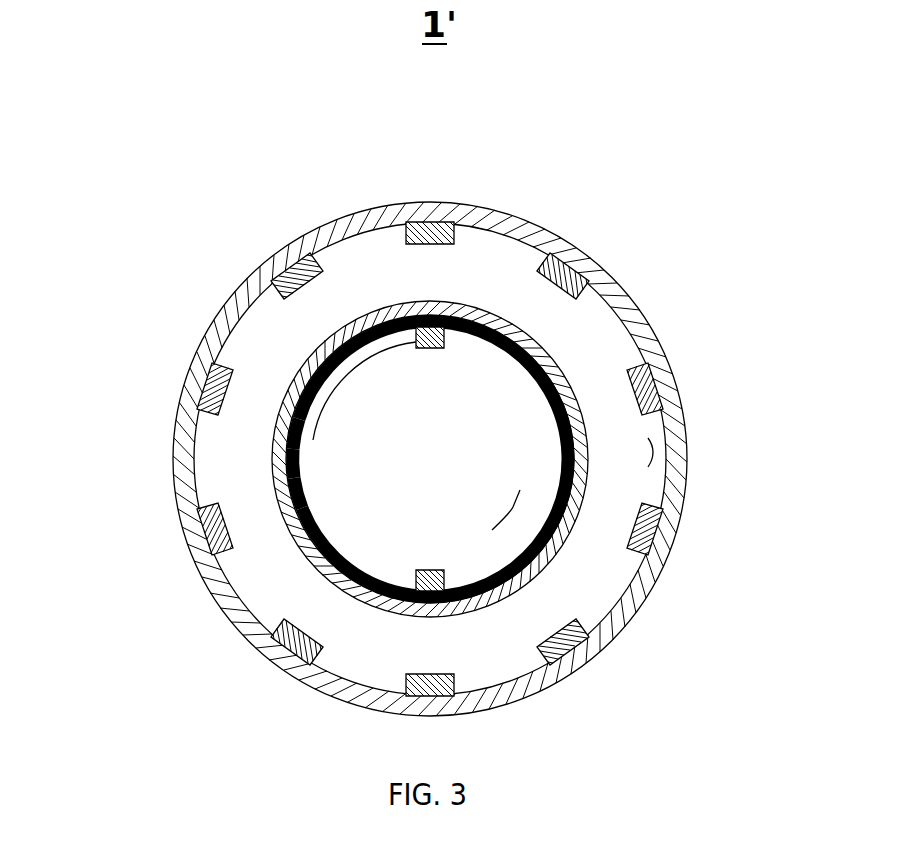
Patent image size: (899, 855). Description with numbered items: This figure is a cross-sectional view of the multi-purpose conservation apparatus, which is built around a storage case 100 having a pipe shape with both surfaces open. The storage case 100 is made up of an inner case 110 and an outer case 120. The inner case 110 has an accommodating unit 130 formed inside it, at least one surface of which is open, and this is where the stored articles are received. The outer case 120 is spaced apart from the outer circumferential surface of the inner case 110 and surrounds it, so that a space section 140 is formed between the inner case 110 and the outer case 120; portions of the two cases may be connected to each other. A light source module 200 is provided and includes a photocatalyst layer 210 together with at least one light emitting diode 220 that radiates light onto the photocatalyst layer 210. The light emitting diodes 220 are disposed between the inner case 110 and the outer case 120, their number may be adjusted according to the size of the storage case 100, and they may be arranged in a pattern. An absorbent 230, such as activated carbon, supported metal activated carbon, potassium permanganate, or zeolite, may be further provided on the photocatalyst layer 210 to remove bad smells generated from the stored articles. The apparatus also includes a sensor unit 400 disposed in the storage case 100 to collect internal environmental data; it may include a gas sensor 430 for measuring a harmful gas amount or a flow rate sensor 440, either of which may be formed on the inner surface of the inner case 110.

The storage case 100 is at (800, 308).
The inner case 110 is at (540, 353).
The outer case 120 is at (672, 377).
The accommodating unit 130 is at (520, 513).
The space section 140 is at (652, 451).
The light source module 200 is at (378, 125).
The photocatalyst layer 210 is at (392, 300).
The light emitting diode 220 is at (420, 222).
The absorbent 230 is at (303, 452).
The sensor unit 400 is at (95, 423).
The gas sensor 430 is at (296, 433).
The flow rate sensor 440 is at (298, 494).